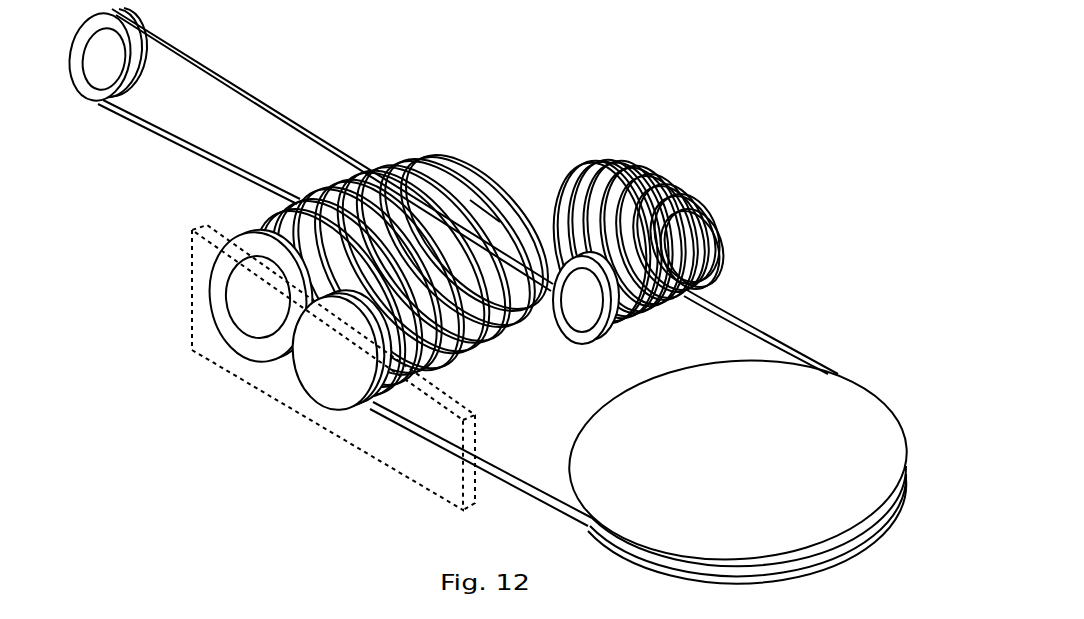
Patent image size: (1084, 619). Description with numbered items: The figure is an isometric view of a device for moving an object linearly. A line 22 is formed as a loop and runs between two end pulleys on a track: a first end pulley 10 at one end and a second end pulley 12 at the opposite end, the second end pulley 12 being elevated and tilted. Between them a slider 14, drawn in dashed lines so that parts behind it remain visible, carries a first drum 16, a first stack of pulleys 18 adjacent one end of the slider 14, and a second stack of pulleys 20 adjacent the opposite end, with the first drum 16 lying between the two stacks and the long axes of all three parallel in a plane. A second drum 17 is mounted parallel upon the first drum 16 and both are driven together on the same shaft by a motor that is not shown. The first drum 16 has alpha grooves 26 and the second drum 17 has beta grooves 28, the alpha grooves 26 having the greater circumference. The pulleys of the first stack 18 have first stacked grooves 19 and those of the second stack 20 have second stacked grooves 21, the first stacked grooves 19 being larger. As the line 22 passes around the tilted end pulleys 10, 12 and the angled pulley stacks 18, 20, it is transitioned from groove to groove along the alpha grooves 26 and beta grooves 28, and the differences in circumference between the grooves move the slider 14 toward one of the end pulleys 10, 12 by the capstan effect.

The first end pulley 10 is at (832, 395).
The second end pulley 12 is at (85, 90).
The slider 14 is at (192, 350).
The first drum 16 is at (325, 392).
The second drum 17 is at (663, 241).
The first stack of pulleys 18 is at (233, 295).
The first stacked grooves 19 is at (300, 293).
The second stack of pulleys 20 is at (714, 240).
The second stacked grooves 21 is at (548, 310).
The line 22 is at (297, 133).
The alpha grooves 26 is at (400, 390).
The beta grooves 28 is at (500, 222).